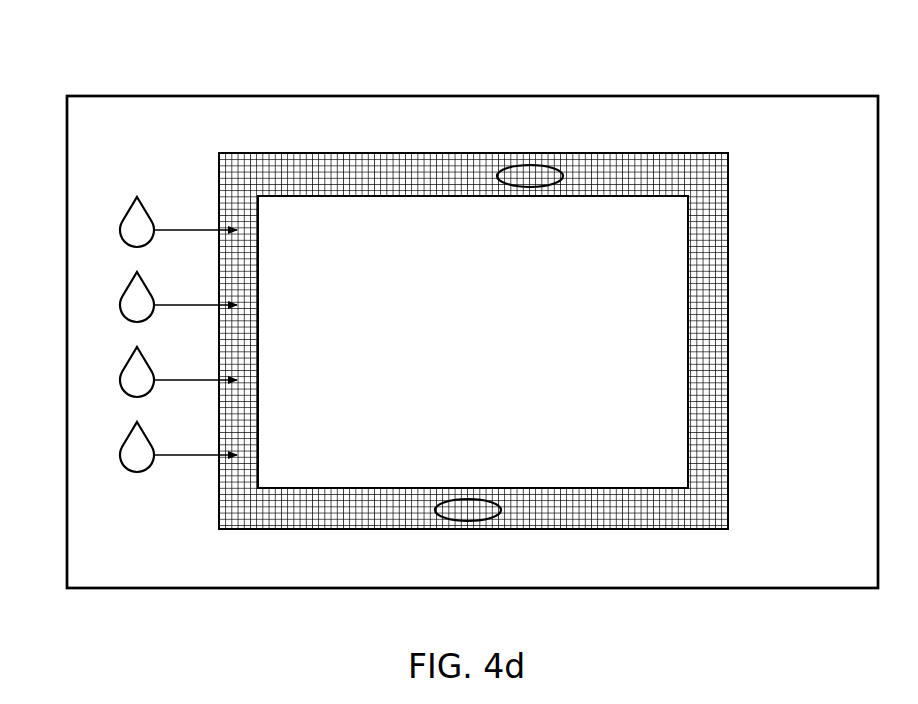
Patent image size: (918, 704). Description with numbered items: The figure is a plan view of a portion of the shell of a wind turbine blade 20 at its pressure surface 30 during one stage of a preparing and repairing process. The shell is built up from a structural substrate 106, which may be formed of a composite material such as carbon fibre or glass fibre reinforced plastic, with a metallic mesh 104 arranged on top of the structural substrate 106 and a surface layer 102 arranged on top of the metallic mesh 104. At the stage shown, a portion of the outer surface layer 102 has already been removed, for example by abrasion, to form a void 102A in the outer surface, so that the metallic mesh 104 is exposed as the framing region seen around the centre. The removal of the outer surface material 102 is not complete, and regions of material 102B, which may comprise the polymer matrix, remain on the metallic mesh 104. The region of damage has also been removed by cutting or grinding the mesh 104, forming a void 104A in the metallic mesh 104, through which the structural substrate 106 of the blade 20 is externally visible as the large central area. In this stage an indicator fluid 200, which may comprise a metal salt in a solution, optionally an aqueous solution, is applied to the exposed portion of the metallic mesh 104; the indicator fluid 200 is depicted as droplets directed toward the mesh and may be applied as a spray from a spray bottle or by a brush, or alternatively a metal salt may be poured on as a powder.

The wind turbine blade 20 is at (703, 78).
The pressure surface 30 is at (826, 177).
The surface layer 102 is at (834, 233).
The void in outer surface 102A is at (287, 153).
The regions of remaining material 102B is at (547, 160).
The metallic mesh 104 is at (683, 530).
The void in metallic mesh 104A is at (394, 194).
The structural substrate 106 is at (500, 353).
The indicator fluid 200 is at (125, 210).